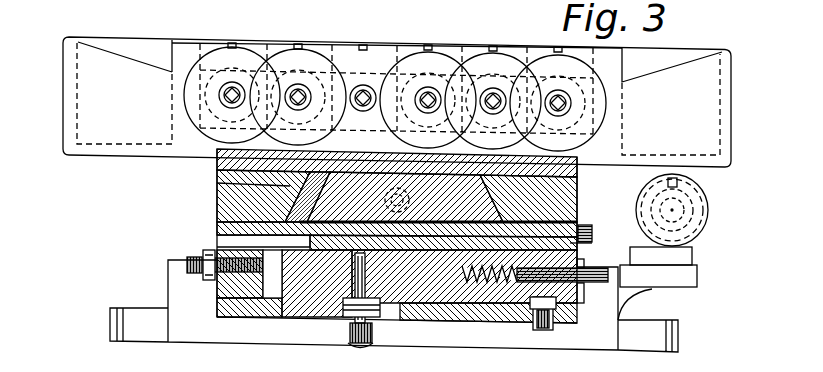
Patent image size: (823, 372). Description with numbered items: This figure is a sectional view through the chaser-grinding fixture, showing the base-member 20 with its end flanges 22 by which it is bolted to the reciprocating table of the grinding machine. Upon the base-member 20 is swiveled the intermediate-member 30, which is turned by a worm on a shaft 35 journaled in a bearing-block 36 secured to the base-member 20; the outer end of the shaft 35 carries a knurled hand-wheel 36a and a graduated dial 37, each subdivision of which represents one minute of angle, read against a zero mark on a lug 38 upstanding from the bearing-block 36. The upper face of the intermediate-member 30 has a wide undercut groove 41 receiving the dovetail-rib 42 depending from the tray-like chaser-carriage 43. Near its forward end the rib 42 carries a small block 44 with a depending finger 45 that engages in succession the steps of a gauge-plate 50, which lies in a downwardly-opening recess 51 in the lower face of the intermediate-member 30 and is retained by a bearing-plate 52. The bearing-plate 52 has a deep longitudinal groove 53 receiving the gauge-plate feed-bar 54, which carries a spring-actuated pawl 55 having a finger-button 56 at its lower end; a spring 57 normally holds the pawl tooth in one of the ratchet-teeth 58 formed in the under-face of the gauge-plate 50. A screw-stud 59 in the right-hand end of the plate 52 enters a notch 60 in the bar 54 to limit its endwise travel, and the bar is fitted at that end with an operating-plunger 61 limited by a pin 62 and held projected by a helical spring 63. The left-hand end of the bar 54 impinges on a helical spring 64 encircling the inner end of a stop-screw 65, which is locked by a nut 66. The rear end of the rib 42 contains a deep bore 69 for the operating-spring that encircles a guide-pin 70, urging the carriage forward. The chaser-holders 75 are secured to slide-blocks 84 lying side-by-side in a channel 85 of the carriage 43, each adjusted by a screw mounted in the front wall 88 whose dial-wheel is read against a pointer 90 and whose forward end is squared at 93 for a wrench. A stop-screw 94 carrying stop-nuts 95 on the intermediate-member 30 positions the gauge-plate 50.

The base-member 20 is at (173, 270).
The flanges 22 is at (135, 325).
The swiveled intermediate-member 30 is at (222, 192).
The shaft 35 is at (677, 217).
The bearing-block 36 is at (683, 257).
The knurled hand-wheel 36a is at (708, 208).
The graduated dial 37 is at (700, 190).
The lug 38 is at (668, 183).
The undercut groove 41 is at (578, 222).
The dovetail-rib 42 is at (216, 175).
The chaser-carriage 43 is at (112, 150).
The small block 44 is at (250, 223).
The finger 45 is at (214, 238).
The gauge-plate 50 is at (455, 305).
The recess 51 is at (300, 243).
The bearing-plate 52 is at (302, 315).
The longitudinal groove 53 is at (275, 297).
The gauge-plate feed-bar 54 is at (408, 307).
The pawl 55 is at (378, 304).
The finger-button 56 is at (358, 347).
The spring 57 is at (348, 312).
The ratchet-teeth 58 is at (401, 318).
The screw-stud 59 is at (535, 302).
The notch 60 is at (556, 318).
The operating-plunger 61 is at (597, 283).
The pin 62 is at (583, 293).
The helical spring 63 is at (503, 284).
The helical spring 64 is at (277, 278).
The stop-screw 65 is at (240, 275).
The nut 66 is at (212, 278).
The bore 69 is at (385, 205).
The guide-pin 70 is at (407, 186).
The chaser-holders 75 is at (248, 42).
The slide-blocks 84 is at (192, 112).
The channel 85 is at (582, 130).
The front wall 88 is at (182, 78).
The pointer 90 is at (298, 43).
The squared end 93 is at (550, 104).
The stop-screw 94 is at (593, 231).
The stop-nuts 95 is at (587, 225).